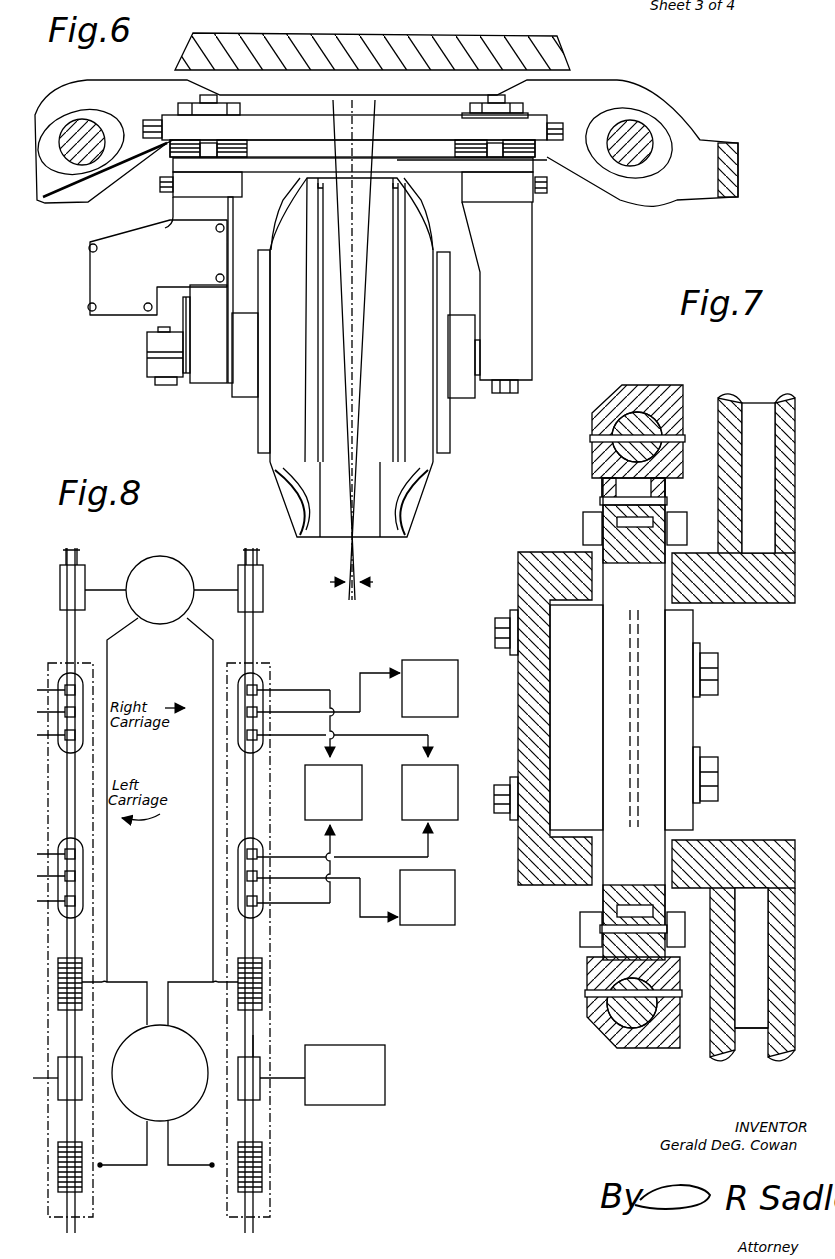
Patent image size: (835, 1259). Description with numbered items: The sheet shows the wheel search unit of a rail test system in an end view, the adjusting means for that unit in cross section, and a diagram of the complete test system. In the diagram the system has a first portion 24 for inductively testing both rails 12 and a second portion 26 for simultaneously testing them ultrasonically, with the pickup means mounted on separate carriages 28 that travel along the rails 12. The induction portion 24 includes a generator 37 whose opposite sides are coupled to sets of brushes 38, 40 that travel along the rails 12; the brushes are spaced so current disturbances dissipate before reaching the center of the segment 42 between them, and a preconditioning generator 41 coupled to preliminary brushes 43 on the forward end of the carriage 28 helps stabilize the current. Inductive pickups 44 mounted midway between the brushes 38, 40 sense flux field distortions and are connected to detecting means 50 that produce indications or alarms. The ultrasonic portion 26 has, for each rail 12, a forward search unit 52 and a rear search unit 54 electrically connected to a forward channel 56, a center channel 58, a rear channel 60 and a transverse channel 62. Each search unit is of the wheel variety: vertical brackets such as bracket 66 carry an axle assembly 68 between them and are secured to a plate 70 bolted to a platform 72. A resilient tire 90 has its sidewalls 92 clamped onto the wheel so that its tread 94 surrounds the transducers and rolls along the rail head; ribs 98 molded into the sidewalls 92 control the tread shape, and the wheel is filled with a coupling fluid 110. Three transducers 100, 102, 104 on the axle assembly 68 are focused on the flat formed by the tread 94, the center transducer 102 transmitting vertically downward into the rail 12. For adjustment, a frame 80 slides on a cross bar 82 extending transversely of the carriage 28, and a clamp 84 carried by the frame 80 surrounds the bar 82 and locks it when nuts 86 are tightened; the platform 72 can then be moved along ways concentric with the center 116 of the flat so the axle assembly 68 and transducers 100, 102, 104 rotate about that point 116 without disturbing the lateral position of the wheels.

In FIG. 8, the rails 12 is at (75, 648).
In FIG. 8, the first portion 24 is at (378, 1135).
In FIG. 8, the second portion 26 is at (345, 668).
In FIG. 8, the carriages 28 is at (108, 653).
In FIG. 8, the generator 37 is at (182, 1033).
In FIG. 8, the set of brushes 38 is at (82, 968).
In FIG. 8, the set of brushes 40 is at (82, 1183).
In FIG. 8, the preconditioning generator 41 is at (173, 563).
In FIG. 8, the segment 42 is at (255, 1035).
In FIG. 8, the preliminary brushes 43 is at (263, 590).
In FIG. 8, the inductive pickups 44 is at (82, 1063).
In FIG. 8, the detecting means 50 is at (365, 1046).
In FIG. 8, the forward search unit 52 is at (86, 700).
In FIG. 8, the rear search unit 54 is at (86, 875).
In FIG. 8, the forward channel 56 is at (440, 662).
In FIG. 8, the center channel 58 is at (445, 767).
In FIG. 8, the rear channel 60 is at (440, 872).
In FIG. 8, the transverse channel 62 is at (358, 767).
In FIG. 6, the bracket 66 is at (517, 345).
In FIG. 6, the axle assembly 68 is at (463, 325).
In FIG. 6, the plate 70 is at (400, 162).
In FIG. 6, the platform 72 is at (252, 133).
In FIG. 7, the frame 80 is at (537, 555).
In FIG. 7, the cross bar 82 is at (615, 718).
In FIG. 7, the clamp 84 is at (575, 637).
In FIG. 7, the nuts 86 is at (712, 690).
In FIG. 6, the resilient tire 90 is at (360, 320).
In FIG. 6, the sidewalls 92 is at (425, 243).
In FIG. 6, the tread 94 is at (330, 372).
In FIG. 6, the ribs 98 is at (168, 148).
In FIG. 8, the transducer 100 is at (257, 738).
In FIG. 8, the center transducer 102 is at (247, 712).
In FIG. 8, the transducer 104 is at (257, 690).
In FIG. 6, the coupling fluid 110 is at (420, 487).
In FIG. 6, the center 116 is at (350, 540).